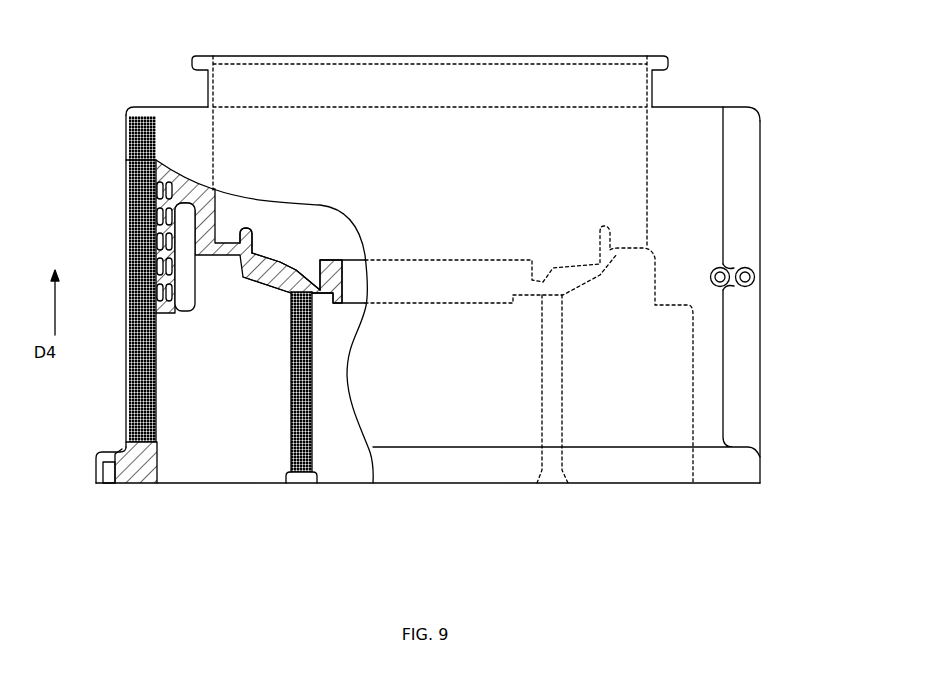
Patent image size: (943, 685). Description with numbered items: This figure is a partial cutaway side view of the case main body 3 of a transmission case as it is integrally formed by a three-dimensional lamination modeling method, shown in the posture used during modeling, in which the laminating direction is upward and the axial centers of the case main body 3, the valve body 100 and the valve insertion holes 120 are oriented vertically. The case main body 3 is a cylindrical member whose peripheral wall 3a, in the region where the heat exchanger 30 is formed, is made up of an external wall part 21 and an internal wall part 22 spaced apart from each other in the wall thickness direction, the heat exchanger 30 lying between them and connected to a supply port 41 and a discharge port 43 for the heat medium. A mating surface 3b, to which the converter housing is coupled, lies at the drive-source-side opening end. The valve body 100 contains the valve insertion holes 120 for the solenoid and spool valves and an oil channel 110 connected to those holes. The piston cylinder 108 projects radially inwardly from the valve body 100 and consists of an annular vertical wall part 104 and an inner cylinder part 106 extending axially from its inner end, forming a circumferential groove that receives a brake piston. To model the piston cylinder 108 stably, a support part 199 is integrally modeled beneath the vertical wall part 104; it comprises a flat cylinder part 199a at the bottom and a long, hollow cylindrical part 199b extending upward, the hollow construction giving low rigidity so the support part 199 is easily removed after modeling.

The case main body 3 is at (721, 46).
The peripheral wall 3a is at (762, 355).
The mating surface 3b is at (143, 486).
The external wall part 21 is at (126, 368).
The internal wall part 22 is at (157, 383).
The heat exchanger 30 is at (128, 316).
The supply port 41 is at (750, 268).
The discharge port 43 is at (751, 286).
The valve body 100 is at (206, 298).
The vertical wall part 104 is at (277, 281).
The inner cylinder part 106 is at (322, 262).
The piston cylinder 108 is at (276, 262).
The oil channel 110 is at (157, 192).
The valve insertion holes 120 is at (185, 313).
The support part 199 is at (286, 421).
The cylinder part 199a is at (303, 485).
The cylindrical part 199b is at (314, 420).